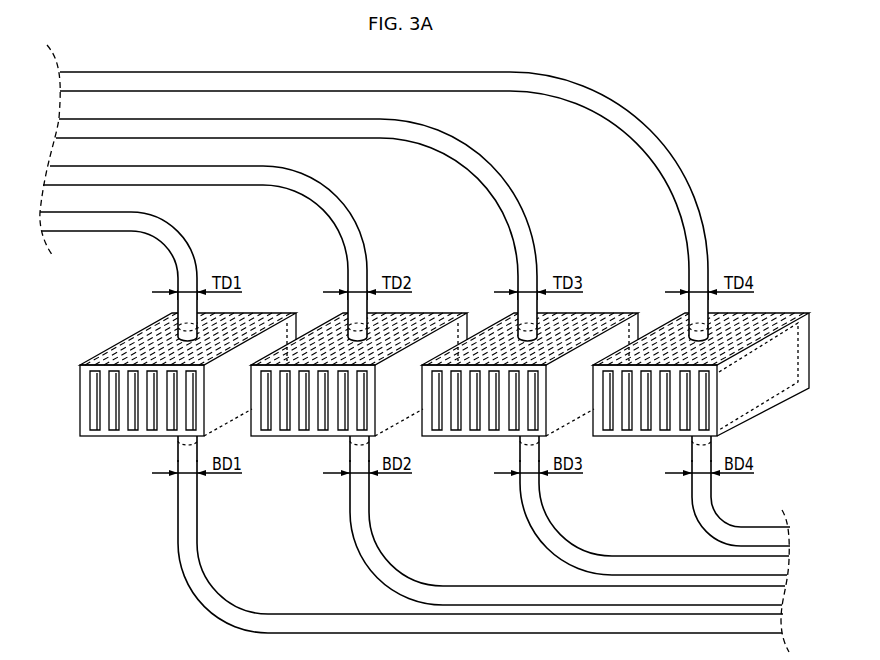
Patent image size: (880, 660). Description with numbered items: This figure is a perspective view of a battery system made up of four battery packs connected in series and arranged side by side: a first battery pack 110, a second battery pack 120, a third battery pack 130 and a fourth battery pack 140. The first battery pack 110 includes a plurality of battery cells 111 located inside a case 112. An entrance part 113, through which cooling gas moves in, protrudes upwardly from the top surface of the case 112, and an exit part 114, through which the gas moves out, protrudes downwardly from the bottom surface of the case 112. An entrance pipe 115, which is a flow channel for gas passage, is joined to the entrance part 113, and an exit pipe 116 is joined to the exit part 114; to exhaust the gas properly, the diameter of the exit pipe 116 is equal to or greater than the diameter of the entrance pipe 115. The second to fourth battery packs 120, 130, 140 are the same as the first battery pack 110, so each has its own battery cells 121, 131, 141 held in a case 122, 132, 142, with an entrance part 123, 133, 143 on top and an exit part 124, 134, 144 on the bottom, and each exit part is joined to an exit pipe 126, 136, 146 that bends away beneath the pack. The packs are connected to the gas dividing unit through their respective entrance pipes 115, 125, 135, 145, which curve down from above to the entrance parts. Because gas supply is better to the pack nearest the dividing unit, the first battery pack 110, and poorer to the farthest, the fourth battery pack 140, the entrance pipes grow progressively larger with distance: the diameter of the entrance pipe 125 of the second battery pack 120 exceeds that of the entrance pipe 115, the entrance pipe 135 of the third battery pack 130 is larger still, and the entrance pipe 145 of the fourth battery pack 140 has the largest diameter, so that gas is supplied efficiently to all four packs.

The first battery pack 110 is at (162, 374).
The battery cells 111 is at (93, 405).
The case 112 is at (93, 380).
The entrance part 113 is at (182, 338).
The exit part 114 is at (178, 440).
The entrance pipe 115 is at (163, 255).
The exit pipe 116 is at (180, 497).
The second battery pack 120 is at (347, 382).
The second unit body 121 is at (265, 428).
The second heat dissipation fins 122 is at (255, 437).
The second inlet pipe portion 123 is at (352, 330).
The second outlet pipe portion 124 is at (350, 442).
The entrance pipe 125 is at (322, 216).
The second lower connecting tube 126 is at (352, 508).
The third battery pack 130 is at (519, 382).
The third unit body 131 is at (437, 428).
The third heat dissipation fins 132 is at (427, 437).
The third inlet pipe portion 133 is at (522, 330).
The third outlet pipe portion 134 is at (520, 442).
The entrance pipe 135 is at (497, 206).
The third lower connecting tube 136 is at (523, 510).
The fourth battery pack 140 is at (689, 384).
The fourth unit body 141 is at (608, 428).
The fourth heat dissipation fins 142 is at (598, 437).
The fourth inlet pipe portion 143 is at (692, 330).
The fourth outlet pipe portion 144 is at (692, 442).
The entrance pipe 145 is at (668, 196).
The fourth lower connecting tube 146 is at (691, 511).